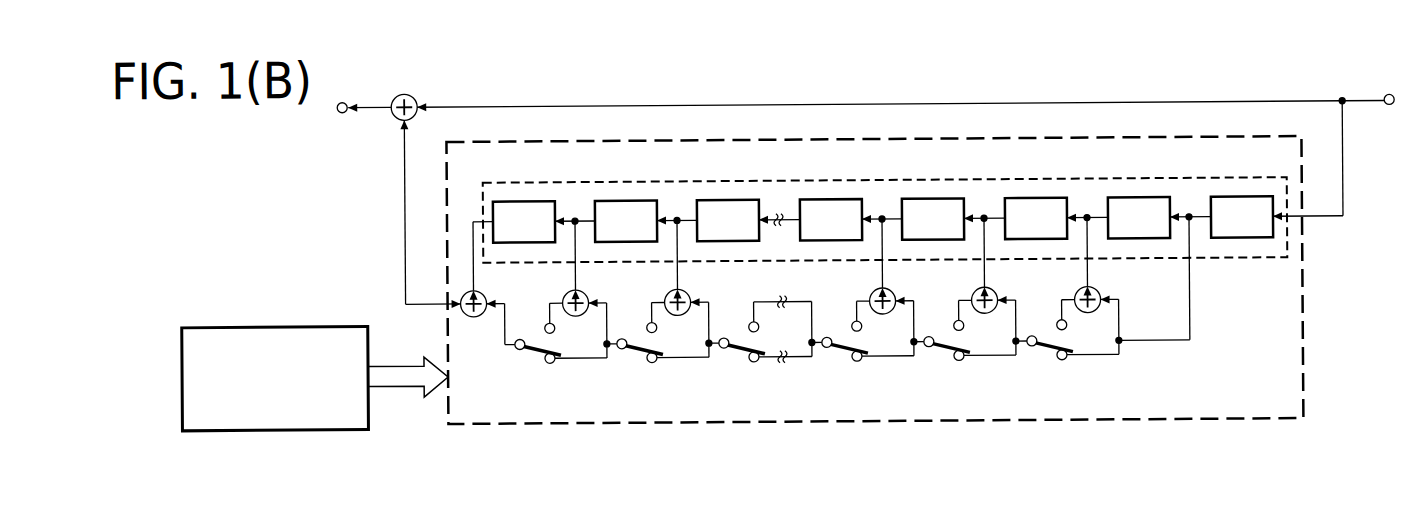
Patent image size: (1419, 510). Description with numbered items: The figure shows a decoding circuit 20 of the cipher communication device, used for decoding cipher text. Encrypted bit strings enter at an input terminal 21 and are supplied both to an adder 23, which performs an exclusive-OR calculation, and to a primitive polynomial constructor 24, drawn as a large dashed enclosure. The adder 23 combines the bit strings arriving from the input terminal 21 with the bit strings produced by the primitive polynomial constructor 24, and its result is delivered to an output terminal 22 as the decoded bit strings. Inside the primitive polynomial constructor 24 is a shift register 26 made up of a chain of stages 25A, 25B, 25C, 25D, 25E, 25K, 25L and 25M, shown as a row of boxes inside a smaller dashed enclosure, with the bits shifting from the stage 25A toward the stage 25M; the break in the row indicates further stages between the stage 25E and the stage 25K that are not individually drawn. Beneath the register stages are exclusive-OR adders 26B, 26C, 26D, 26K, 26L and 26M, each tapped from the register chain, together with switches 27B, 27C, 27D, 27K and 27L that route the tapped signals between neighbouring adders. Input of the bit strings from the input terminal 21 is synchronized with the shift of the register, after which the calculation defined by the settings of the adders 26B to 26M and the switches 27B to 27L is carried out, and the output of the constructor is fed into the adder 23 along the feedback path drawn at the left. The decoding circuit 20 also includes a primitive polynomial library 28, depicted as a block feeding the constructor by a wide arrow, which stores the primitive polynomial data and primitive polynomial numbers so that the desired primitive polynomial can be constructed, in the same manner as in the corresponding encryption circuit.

The decoding circuit 20 is at (281, 260).
The input terminal 21 is at (1390, 112).
The output terminal 22 is at (341, 113).
The adder 23 is at (414, 97).
The primitive polynomial constructor 24 is at (1304, 369).
The shift register stage 25A is at (1242, 216).
The shift register stage 25B is at (1139, 217).
The shift register stage 25C is at (1036, 218).
The shift register stage 25D is at (933, 218).
The shift register stage 25E is at (831, 219).
The shift register stage 25K is at (728, 220).
The shift register stage 25L is at (626, 221).
The shift register stage 25M is at (524, 221).
The shift register 26 is at (1243, 264).
The adder 26B is at (1097, 292).
The adder 26C is at (994, 292).
The adder 26D is at (892, 292).
The adder 26K is at (687, 292).
The adder 26L is at (585, 292).
The adder 26M is at (483, 292).
The switch 27B is at (1042, 354).
The switch 27C is at (939, 354).
The switch 27D is at (837, 354).
The switch 27K is at (632, 354).
The switch 27L is at (530, 354).
The primitive polynomial library 28 is at (348, 303).